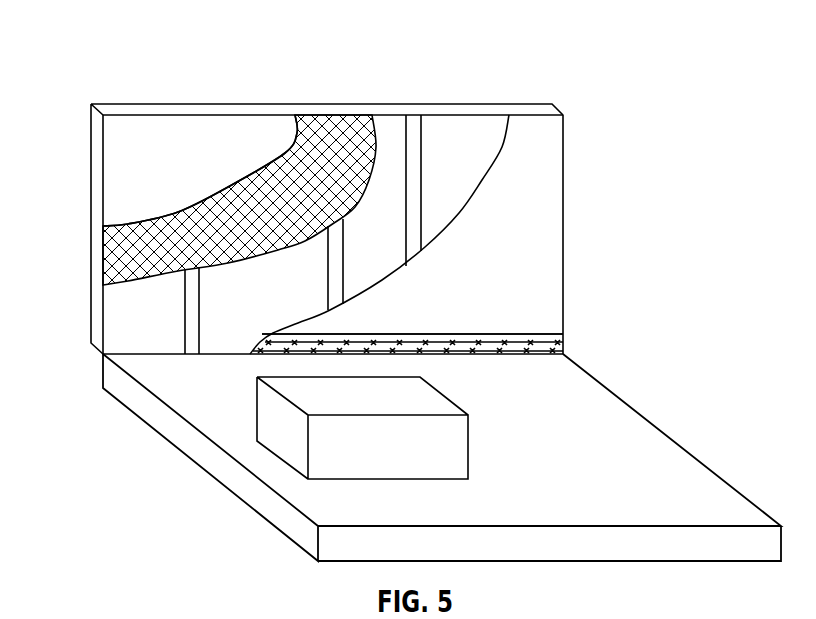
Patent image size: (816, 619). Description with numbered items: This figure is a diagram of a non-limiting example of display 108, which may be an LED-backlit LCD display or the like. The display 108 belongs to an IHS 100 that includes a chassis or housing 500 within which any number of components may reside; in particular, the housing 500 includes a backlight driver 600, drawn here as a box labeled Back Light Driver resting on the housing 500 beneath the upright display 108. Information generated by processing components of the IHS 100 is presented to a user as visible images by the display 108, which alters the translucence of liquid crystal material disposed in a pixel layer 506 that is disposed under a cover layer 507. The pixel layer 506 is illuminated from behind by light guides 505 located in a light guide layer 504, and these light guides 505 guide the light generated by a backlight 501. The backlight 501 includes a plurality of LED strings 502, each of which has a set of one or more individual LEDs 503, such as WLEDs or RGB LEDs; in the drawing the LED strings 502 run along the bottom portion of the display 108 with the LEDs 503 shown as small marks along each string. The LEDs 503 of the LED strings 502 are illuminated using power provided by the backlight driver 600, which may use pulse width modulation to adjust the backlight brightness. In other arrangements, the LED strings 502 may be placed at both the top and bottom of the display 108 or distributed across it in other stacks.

The IHS 100 is at (122, 42).
The display 108 is at (90, 121).
The chassis or housing 500 is at (155, 443).
The backlight 501 is at (479, 332).
The LED strings 502 is at (565, 340).
The LEDs 503 is at (402, 331).
The light guide layer 504 is at (278, 306).
The light guides 505 is at (182, 278).
The pixel layer 506 is at (267, 223).
The cover layer 507 is at (193, 169).
The backlight driver 600 is at (468, 447).